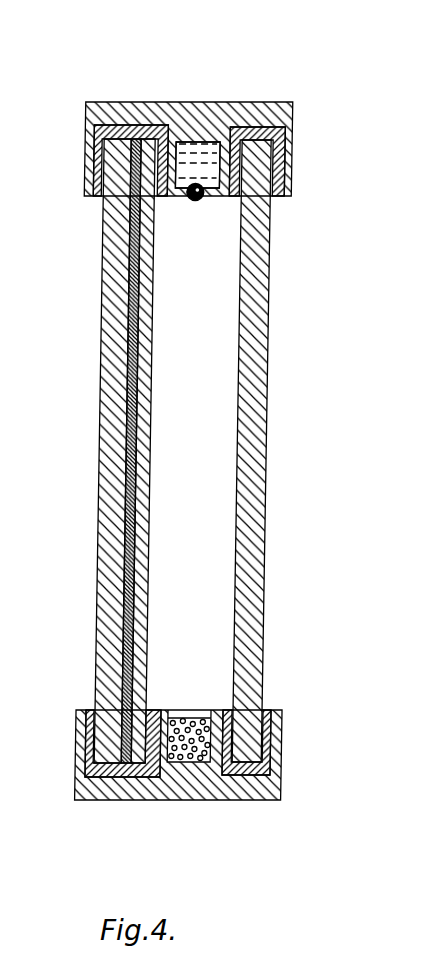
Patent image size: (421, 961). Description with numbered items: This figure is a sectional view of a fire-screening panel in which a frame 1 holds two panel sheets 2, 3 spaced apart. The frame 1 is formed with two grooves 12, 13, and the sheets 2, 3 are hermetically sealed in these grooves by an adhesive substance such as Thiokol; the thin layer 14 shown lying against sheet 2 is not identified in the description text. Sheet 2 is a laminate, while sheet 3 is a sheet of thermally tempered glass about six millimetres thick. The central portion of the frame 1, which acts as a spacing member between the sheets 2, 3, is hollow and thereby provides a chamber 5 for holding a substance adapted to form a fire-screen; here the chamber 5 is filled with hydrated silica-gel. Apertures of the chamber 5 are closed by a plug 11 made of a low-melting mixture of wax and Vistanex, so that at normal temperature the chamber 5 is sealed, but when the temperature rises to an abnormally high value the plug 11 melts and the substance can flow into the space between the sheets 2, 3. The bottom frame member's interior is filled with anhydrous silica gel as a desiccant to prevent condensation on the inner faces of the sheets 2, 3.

The frame 1 is at (301, 115).
The panel sheet 2 is at (82, 391).
The panel sheet 3 is at (285, 403).
The chamber 5 is at (211, 151).
The plug 11 is at (200, 200).
The groove 12 is at (274, 178).
The groove 13 is at (83, 170).
The liner 14 is at (133, 147).